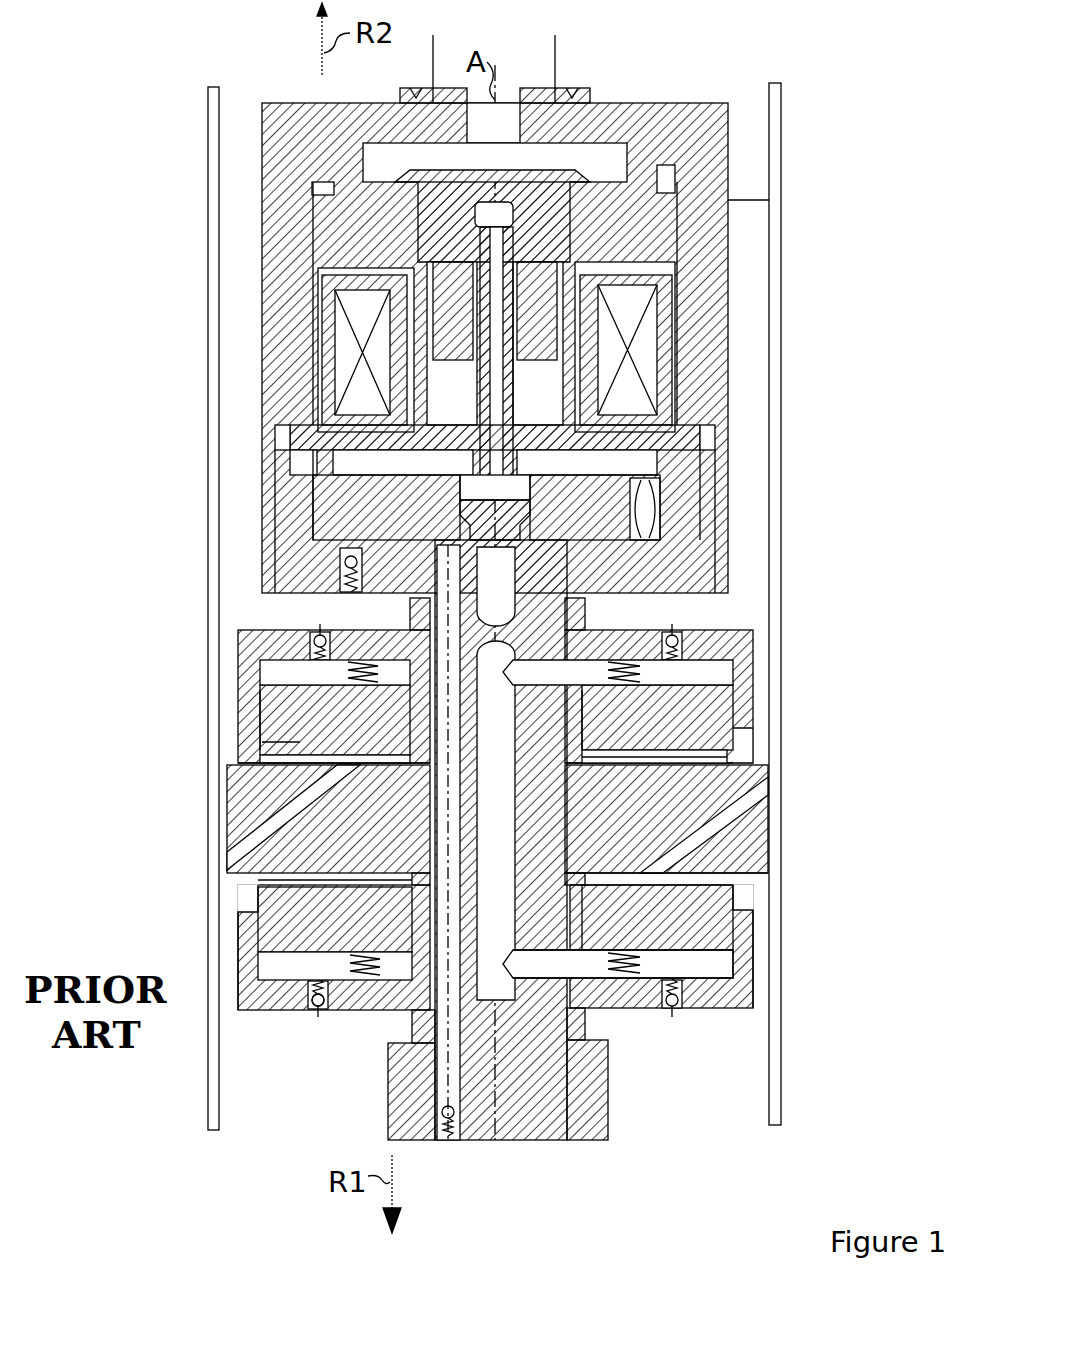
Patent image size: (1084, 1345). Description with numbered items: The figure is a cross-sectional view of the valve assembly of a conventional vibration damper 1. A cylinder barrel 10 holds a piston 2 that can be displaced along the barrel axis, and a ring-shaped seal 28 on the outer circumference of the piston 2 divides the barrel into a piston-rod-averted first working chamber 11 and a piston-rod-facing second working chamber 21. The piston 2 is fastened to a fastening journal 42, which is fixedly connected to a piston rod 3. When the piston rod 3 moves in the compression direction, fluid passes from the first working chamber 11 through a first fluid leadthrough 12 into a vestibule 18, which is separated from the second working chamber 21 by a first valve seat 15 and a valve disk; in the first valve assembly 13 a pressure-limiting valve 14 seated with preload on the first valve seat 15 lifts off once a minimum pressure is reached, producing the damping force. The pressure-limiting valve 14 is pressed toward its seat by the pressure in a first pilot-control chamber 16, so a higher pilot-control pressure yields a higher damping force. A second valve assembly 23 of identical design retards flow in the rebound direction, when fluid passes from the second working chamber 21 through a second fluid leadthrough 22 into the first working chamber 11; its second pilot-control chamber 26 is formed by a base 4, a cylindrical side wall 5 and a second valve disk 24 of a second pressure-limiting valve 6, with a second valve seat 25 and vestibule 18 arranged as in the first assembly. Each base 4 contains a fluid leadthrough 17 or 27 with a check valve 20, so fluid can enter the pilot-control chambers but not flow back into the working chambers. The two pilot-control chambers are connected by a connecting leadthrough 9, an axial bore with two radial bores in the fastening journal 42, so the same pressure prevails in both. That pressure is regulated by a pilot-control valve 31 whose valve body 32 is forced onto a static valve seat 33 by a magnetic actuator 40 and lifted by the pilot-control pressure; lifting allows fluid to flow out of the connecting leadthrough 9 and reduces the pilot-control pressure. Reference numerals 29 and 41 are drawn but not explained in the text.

The vibration damper 1 is at (714, 46).
The piston 2 is at (608, 828).
The piston rod 3 is at (560, 58).
The base 4 is at (280, 632).
The cylindrical side wall 5 is at (268, 672).
The pressure-limiting valve 6 is at (330, 743).
The connecting leadthrough 9 is at (510, 816).
The cylinder barrel 10 is at (783, 112).
The first working chamber 11 is at (690, 1088).
The first fluid leadthrough 12 is at (232, 800).
The first valve assembly 13 is at (266, 745).
The pressure-limiting valve 14 is at (268, 728).
The first valve seat 15 is at (270, 760).
The first pilot-control chamber 16 is at (242, 640).
The fluid leadthrough 17 is at (674, 628).
The vestibule 18 is at (302, 880).
The check valve 20 is at (672, 632).
The second working chamber 21 is at (750, 188).
The second fluid leadthrough 22 is at (740, 815).
The second valve assembly 23 is at (797, 918).
The second valve disk 24 is at (737, 905).
The second valve seat 25 is at (742, 872).
The second pilot-control chamber 26 is at (697, 968).
The fluid leadthrough 27 is at (313, 1008).
The ring-shaped seal 28 is at (245, 822).
The end piece 29 is at (592, 1142).
The pilot-control valve 31 is at (802, 477).
The valve body 32 is at (452, 518).
The valve seat 33 is at (602, 512).
The magnetic actuator 40 is at (598, 296).
The spring seat 41 is at (588, 718).
The fastening journal 42 is at (518, 1145).